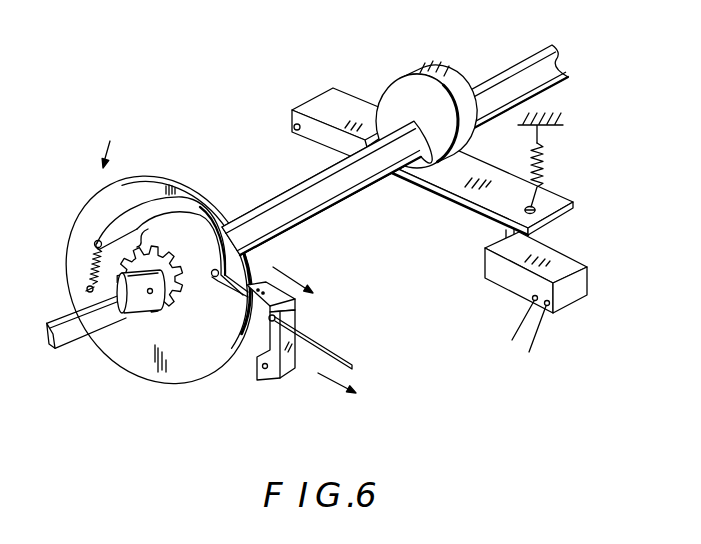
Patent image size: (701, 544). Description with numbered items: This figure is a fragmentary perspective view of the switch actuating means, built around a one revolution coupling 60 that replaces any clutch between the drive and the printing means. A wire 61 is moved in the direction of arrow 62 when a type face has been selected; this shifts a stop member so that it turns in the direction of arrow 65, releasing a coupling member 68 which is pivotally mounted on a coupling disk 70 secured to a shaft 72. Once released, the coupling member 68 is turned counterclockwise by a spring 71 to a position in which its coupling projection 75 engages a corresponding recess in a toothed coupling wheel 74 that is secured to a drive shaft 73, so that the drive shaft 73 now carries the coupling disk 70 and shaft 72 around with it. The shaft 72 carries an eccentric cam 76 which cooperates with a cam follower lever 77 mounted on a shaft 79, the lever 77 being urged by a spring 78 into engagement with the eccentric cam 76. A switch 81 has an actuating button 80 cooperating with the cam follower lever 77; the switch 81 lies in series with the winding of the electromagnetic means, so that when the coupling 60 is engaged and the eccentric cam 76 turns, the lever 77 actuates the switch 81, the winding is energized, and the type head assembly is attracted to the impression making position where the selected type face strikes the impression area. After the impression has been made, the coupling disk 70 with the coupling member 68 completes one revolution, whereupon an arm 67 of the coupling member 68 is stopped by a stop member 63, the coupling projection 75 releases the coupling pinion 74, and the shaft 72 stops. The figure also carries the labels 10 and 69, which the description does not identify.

The one revolution coupling 60 is at (96, 147).
The disc plate 10 is at (187, 376).
The coupling disk 70 is at (193, 370).
The coupling member 68 is at (190, 210).
The pivot pin 69 is at (214, 278).
The arm 67 is at (237, 297).
The toothed coupling wheel 74 is at (150, 322).
The drive shaft 73 is at (63, 352).
The spring 71 is at (90, 275).
The coupling projection 75 is at (147, 233).
The stop member 63 is at (292, 313).
The wire 61 is at (347, 362).
The arrow 65 is at (302, 270).
The arrow 62 is at (322, 380).
The shaft 72 is at (357, 186).
The eccentric cam 76 is at (452, 76).
The shaft 79 is at (292, 136).
The cam follower lever 77 is at (562, 203).
The spring 78 is at (545, 162).
The actuating button 80 is at (500, 239).
The switch 81 is at (580, 287).